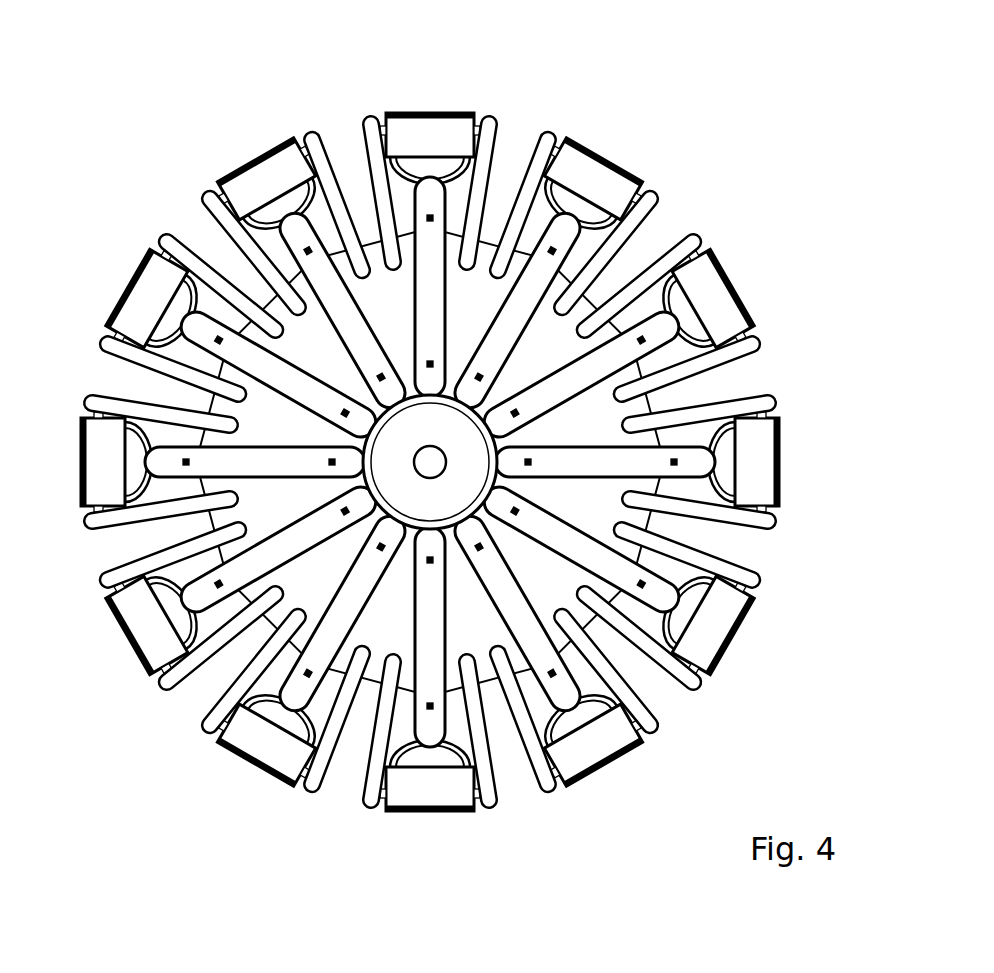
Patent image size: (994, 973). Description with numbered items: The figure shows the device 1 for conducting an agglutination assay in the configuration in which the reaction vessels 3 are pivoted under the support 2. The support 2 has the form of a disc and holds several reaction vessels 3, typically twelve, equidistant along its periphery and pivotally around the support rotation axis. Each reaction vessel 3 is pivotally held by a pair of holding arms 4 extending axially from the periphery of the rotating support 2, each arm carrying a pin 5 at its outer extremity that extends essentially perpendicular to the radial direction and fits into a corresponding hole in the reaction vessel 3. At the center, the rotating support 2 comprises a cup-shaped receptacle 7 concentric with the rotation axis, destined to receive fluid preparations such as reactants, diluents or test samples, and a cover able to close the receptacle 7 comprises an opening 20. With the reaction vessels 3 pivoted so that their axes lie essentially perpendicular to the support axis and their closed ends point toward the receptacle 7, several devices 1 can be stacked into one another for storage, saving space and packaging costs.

The device 1 is at (138, 839).
The support 2 is at (583, 505).
The reaction vessels 3 is at (641, 340).
The holding arms 4 is at (400, 133).
The pin 5 is at (290, 139).
The cup-shaped receptacle 7 is at (460, 458).
The opening 20 is at (430, 460).